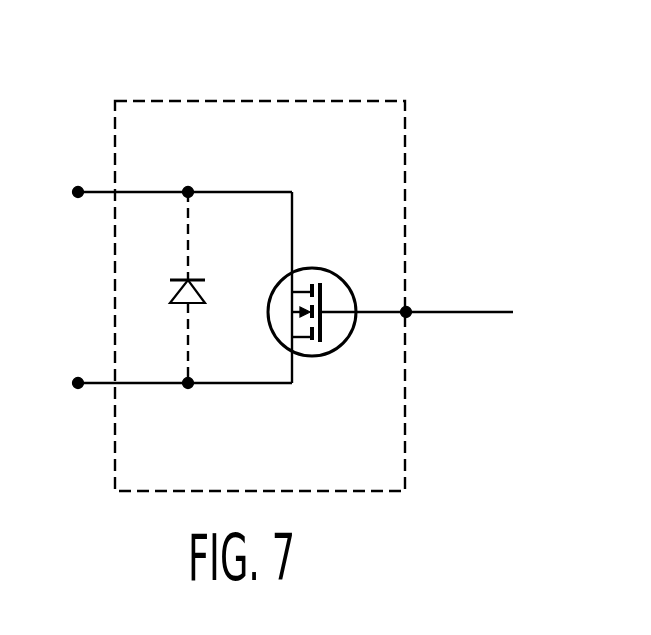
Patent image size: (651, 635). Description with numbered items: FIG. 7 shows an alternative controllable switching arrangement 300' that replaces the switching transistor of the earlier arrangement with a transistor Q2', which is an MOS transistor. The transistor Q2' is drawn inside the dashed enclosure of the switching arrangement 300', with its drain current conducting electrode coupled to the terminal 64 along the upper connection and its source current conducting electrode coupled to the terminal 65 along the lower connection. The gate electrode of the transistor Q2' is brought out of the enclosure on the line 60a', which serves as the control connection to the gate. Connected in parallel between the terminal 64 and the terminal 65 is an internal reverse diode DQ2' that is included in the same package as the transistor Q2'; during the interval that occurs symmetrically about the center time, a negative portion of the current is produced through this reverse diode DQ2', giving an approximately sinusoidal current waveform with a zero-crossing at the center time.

The controllable switching arrangement 300' is at (269, 271).
The terminal 64 is at (243, 190).
The terminal 65 is at (218, 386).
The output line 60a' is at (416, 290).
The transistor Q2' is at (291, 339).
The internal reverse diode DQ2' is at (169, 287).